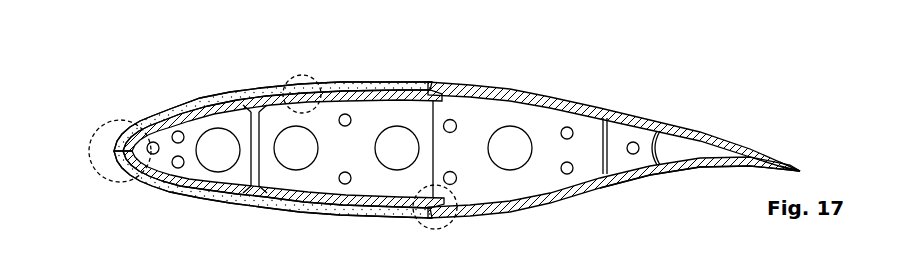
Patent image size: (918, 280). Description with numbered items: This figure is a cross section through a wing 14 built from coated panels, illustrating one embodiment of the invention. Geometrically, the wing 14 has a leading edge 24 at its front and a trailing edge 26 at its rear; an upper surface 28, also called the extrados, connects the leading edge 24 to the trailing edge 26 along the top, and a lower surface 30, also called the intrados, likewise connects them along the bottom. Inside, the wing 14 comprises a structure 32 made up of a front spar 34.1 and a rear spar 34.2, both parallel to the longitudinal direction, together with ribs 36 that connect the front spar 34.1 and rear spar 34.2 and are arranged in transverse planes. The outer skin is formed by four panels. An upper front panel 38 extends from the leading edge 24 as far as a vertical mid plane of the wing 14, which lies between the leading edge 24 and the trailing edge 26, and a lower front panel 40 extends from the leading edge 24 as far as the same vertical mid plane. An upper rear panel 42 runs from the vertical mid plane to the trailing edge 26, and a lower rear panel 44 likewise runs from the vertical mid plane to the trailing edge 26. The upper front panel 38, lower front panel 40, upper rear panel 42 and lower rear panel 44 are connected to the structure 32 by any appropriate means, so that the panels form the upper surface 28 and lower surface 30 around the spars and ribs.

The wing 14 is at (262, 60).
The leading edge 24 is at (95, 123).
The trailing edge 26 is at (792, 158).
The upper surface 28 is at (433, 80).
The lower surface 30 is at (493, 218).
The structure 32 is at (376, 186).
The front spar 34.1 is at (264, 192).
The rear spar 34.2 is at (609, 161).
The ribs 36 is at (375, 110).
The upper front panel 38 is at (197, 97).
The lower front panel 40 is at (200, 197).
The upper rear panel 42 is at (642, 110).
The lower rear panel 44 is at (700, 178).